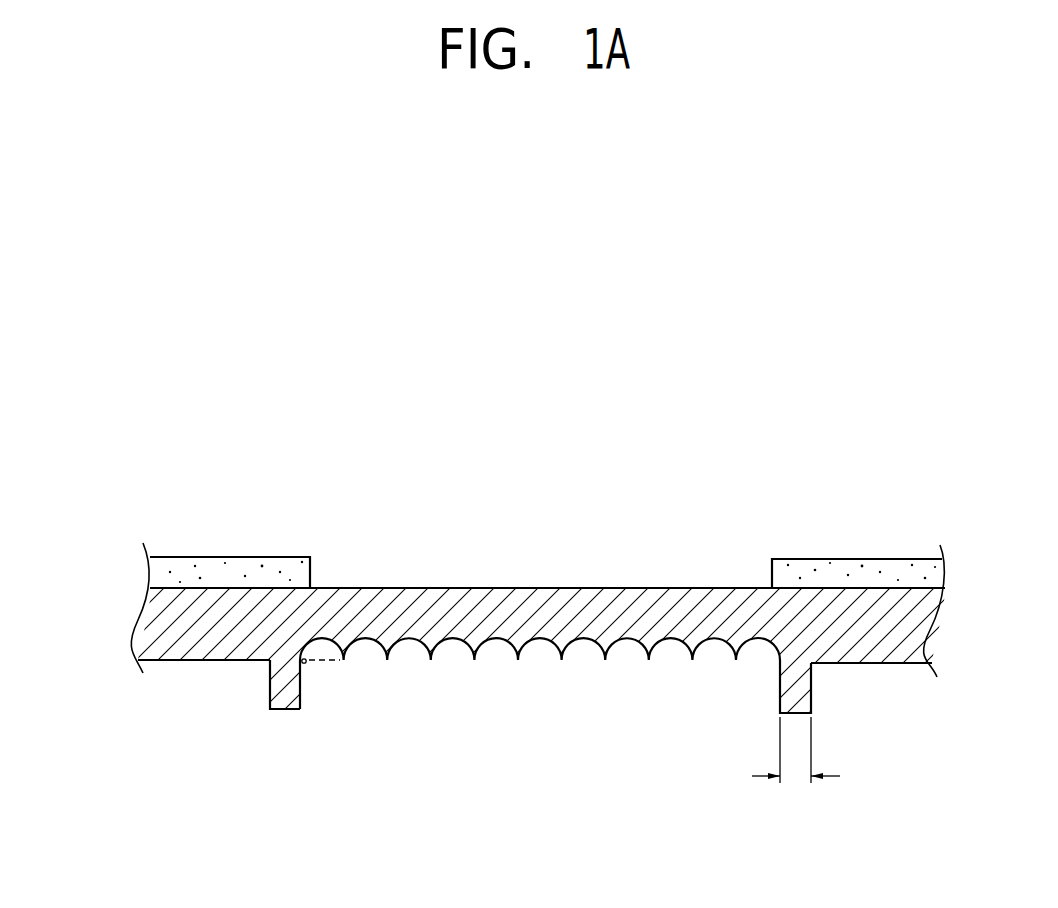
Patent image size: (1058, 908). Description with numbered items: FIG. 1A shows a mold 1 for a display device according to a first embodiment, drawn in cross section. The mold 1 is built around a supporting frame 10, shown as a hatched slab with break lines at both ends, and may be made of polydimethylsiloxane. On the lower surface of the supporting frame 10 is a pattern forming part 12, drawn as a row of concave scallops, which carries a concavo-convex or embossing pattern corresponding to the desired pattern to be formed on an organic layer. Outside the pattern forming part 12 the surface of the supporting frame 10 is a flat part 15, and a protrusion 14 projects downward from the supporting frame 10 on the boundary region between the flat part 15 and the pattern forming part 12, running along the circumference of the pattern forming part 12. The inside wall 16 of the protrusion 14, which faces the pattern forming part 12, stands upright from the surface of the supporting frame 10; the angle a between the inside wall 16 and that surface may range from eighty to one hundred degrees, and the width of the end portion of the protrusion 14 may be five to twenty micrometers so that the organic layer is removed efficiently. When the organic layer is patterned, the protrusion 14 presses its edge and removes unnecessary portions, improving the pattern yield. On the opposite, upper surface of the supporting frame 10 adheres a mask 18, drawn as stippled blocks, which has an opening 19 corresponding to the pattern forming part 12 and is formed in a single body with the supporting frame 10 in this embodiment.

The mold 1 is at (764, 480).
The supporting frame 10 is at (153, 627).
The pattern forming part 12 is at (455, 641).
The protrusion 14 is at (285, 702).
The flat part 15 is at (201, 661).
The inside wall 16 is at (302, 692).
The angle a is at (307, 665).
The mask 18 is at (234, 568).
The opening 19 is at (343, 569).